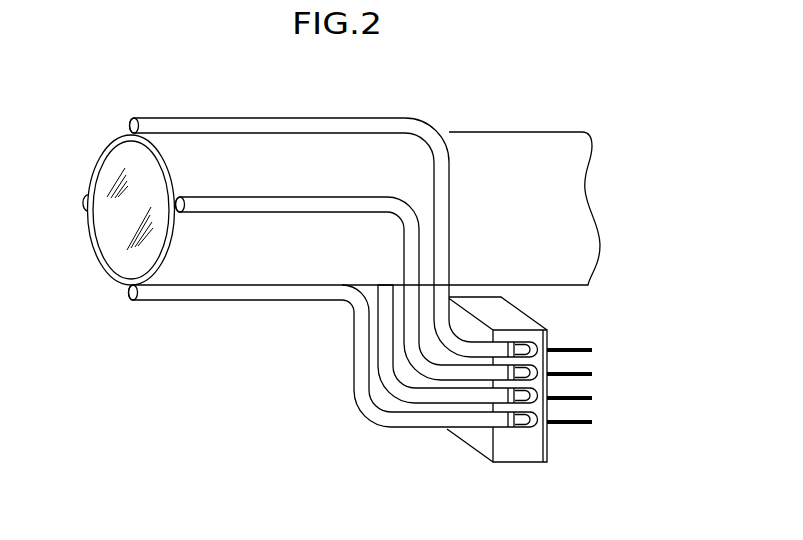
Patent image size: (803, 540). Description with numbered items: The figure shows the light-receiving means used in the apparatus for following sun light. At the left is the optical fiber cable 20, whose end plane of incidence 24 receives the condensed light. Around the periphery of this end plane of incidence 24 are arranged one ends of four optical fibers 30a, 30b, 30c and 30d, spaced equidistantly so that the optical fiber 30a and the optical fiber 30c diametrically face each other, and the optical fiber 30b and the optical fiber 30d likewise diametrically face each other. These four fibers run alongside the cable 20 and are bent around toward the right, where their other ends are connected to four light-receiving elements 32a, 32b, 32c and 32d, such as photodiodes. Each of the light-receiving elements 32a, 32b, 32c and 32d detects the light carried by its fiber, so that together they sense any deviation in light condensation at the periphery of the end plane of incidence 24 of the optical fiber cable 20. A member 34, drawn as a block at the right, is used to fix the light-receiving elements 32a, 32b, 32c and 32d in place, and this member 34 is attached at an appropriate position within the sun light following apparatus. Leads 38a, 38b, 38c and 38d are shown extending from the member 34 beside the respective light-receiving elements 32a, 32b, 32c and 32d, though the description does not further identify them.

The optical fiber cable 20 is at (507, 132).
The end plane of incidence 24 is at (100, 262).
The optical fiber 30a is at (161, 117).
The optical fiber 30b is at (84, 195).
The optical fiber 30c is at (177, 301).
The optical fiber 30d is at (240, 212).
The light-receiving element 32a is at (524, 347).
The light-receiving element 32b is at (547, 366).
The light-receiving element 32c is at (547, 390).
The light-receiving element 32d is at (547, 413).
The member 34 is at (513, 462).
The first optical fiber 38a is at (590, 348).
The second optical fiber 38b is at (593, 376).
The third optical fiber 38c is at (596, 399).
The fourth optical fiber 38d is at (578, 426).